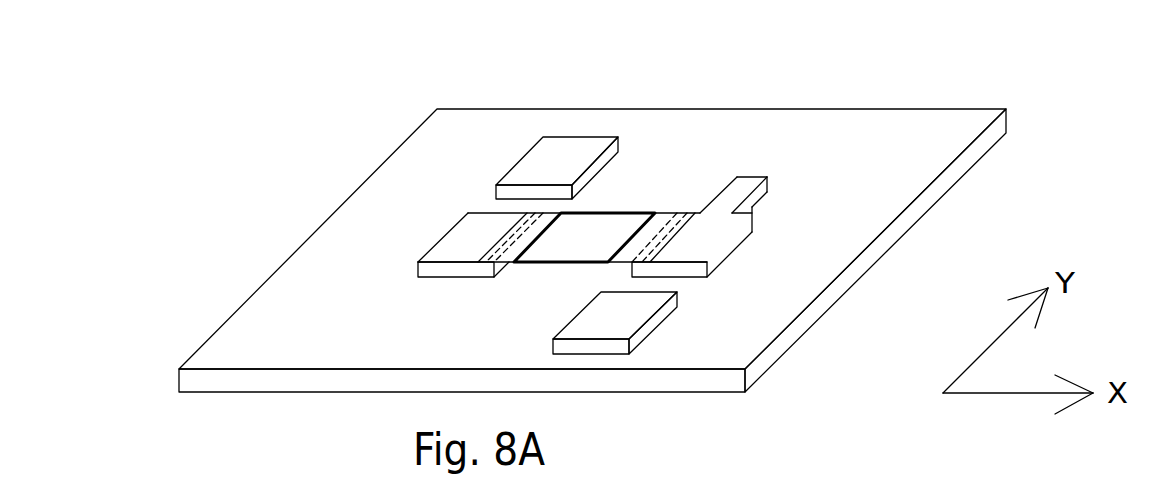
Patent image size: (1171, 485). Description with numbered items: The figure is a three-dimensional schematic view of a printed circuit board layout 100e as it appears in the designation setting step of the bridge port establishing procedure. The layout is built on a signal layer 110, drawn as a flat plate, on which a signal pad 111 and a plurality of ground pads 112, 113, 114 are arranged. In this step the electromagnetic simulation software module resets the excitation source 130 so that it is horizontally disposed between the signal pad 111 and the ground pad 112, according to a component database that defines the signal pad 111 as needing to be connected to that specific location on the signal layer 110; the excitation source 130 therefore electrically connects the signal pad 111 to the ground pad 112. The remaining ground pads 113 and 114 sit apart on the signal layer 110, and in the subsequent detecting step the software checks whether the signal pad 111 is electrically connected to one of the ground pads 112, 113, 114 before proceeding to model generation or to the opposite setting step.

The printed circuit board layout 100e is at (77, 67).
The signal layer 110 is at (906, 190).
The signal pad 111 is at (703, 246).
The ground pad 112 is at (452, 242).
The ground pad 113 is at (530, 167).
The ground pad 114 is at (626, 325).
The excitation source 130 is at (612, 213).